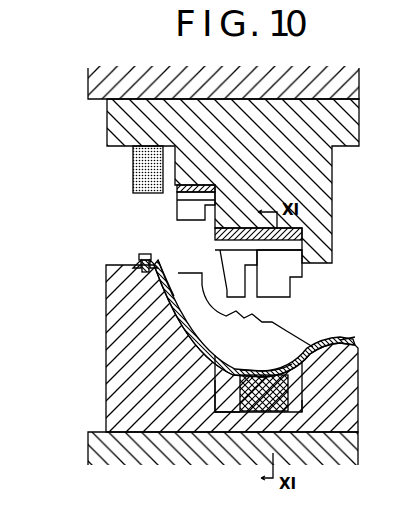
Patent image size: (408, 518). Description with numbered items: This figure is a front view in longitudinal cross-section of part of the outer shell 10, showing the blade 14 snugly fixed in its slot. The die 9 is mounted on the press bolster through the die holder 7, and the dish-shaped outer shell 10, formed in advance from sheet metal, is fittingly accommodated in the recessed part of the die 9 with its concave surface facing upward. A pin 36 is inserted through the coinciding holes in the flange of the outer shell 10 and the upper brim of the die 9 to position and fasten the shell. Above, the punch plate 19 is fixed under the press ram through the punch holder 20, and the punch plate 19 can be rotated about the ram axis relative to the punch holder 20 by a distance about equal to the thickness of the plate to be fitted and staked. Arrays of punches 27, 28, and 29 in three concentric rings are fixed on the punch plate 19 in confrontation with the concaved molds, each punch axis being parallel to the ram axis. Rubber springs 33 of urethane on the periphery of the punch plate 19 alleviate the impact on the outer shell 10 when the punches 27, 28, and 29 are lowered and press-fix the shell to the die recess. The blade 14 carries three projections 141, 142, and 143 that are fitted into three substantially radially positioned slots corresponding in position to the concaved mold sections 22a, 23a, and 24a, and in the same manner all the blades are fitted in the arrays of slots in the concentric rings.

The punch holder 20 is at (96, 82).
The punch plate 19 is at (113, 118).
The spring 33 is at (133, 163).
The punch 29 is at (176, 205).
The punch 28 is at (219, 262).
The punch 27 is at (287, 291).
The pin 36 is at (143, 258).
The die 9 is at (107, 371).
The projection 142 is at (247, 413).
The concaved mold section 23a is at (205, 396).
The concaved mold section 22a is at (314, 436).
The die holder 7 is at (92, 440).
The concaved mold section 24a is at (178, 305).
The projection 143 is at (170, 290).
The projection 141 is at (271, 368).
The blade 14 is at (285, 330).
The outer shell 10 is at (353, 339).